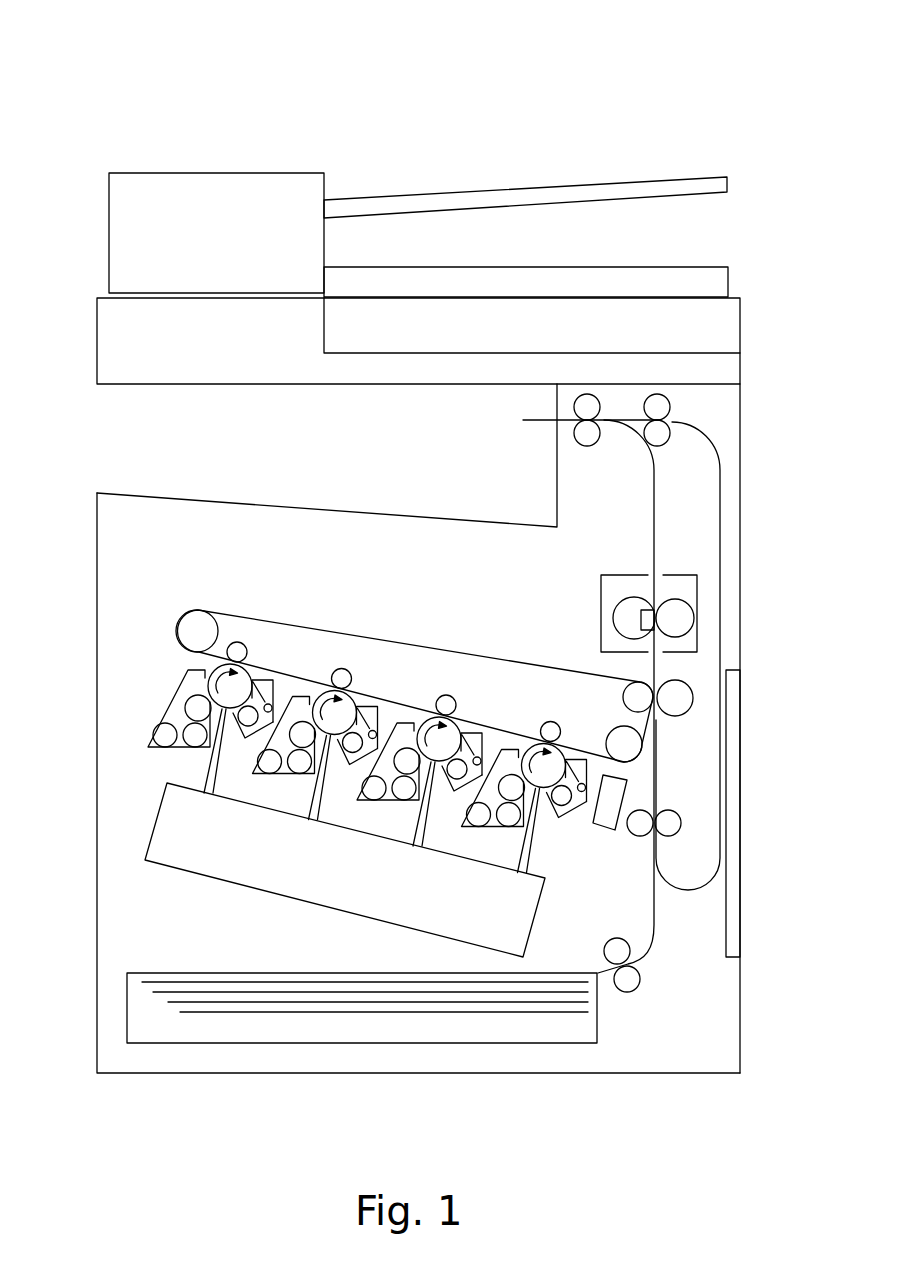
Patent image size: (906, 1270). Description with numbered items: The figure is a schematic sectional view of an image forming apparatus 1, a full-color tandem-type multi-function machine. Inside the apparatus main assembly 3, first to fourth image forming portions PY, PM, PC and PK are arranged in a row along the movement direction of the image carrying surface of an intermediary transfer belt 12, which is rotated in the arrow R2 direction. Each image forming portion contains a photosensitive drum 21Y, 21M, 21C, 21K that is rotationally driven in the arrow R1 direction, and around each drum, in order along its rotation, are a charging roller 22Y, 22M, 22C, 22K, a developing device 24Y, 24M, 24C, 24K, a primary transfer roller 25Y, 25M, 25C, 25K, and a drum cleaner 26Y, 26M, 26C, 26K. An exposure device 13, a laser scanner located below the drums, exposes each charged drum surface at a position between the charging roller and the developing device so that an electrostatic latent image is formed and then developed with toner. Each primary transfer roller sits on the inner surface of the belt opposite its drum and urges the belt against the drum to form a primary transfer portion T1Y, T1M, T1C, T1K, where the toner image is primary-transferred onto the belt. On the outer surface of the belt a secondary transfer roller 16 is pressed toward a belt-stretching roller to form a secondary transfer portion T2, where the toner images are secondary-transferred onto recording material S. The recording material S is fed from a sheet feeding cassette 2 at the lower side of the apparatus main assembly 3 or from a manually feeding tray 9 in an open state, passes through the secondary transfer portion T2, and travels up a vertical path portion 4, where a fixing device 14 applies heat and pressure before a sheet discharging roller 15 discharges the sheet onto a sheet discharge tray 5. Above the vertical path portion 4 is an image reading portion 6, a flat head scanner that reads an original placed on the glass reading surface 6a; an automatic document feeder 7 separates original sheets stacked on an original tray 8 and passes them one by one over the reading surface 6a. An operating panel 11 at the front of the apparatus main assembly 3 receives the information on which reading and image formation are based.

The image forming apparatus 1 is at (683, 70).
The sheet feeding cassette 2 is at (125, 1005).
The apparatus main assembly 3 is at (117, 730).
The vertical path portion 4 is at (740, 480).
The sheet discharge tray 5 is at (431, 517).
The image reading portion 6 is at (740, 370).
The reading surface 6a is at (612, 297).
The automatic document feeder 7 is at (238, 173).
The original tray 8 is at (543, 187).
The manually feeding tray 9 is at (733, 820).
The operating panel 11 is at (723, 327).
The intermediary transfer belt 12 is at (538, 663).
The exposure device 13 is at (533, 913).
The fixing device 14 is at (630, 575).
The sheet discharging roller 15 is at (585, 447).
The secondary transfer roller 16 is at (665, 678).
The photosensitive drum 21Y is at (234, 715).
The photosensitive drum 21M is at (338, 738).
The photosensitive drum 21C is at (442, 762).
The photosensitive drum 21K is at (547, 764).
The charging roller 22Y is at (237, 740).
The charging roller 22M is at (353, 779).
The charging roller 22C is at (457, 806).
The charging roller 22K is at (568, 819).
The developing device 24Y is at (177, 748).
The developing device 24M is at (284, 754).
The developing device 24C is at (388, 780).
The developing device 24K is at (493, 807).
The primary transfer roller 25Y is at (248, 641).
The primary transfer roller 25M is at (361, 664).
The primary transfer roller 25C is at (467, 687).
The primary transfer roller 25K is at (571, 716).
The drum cleaner 26Y is at (276, 686).
The drum cleaner 26M is at (390, 711).
The drum cleaner 26C is at (493, 737).
The drum cleaner 26K is at (599, 816).
The first image forming portion PY is at (268, 660).
The second image forming portion PM is at (368, 672).
The third image forming portion PC is at (472, 698).
The fourth image forming portion PK is at (576, 720).
The primary transfer portion T1Y is at (231, 645).
The primary transfer portion T1M is at (346, 632).
The primary transfer portion T1C is at (428, 681).
The primary transfer portion T1K is at (542, 704).
The secondary transfer portion T2 is at (656, 705).
The rotational direction of photosensitive drum R1 is at (384, 722).
The rotational direction of intermediary transfer belt R2 is at (483, 642).
The recording material S is at (220, 982).